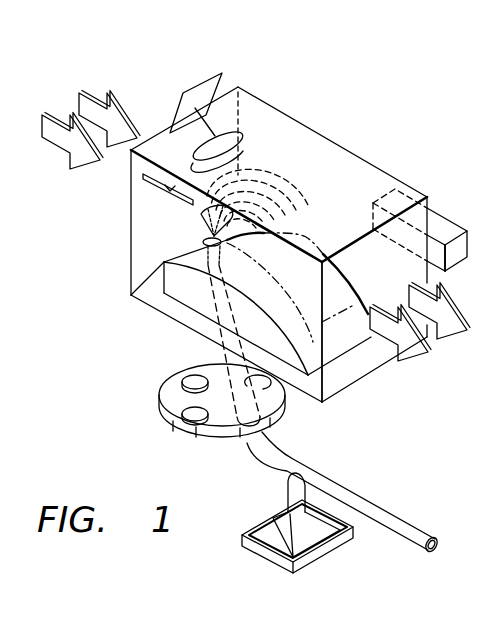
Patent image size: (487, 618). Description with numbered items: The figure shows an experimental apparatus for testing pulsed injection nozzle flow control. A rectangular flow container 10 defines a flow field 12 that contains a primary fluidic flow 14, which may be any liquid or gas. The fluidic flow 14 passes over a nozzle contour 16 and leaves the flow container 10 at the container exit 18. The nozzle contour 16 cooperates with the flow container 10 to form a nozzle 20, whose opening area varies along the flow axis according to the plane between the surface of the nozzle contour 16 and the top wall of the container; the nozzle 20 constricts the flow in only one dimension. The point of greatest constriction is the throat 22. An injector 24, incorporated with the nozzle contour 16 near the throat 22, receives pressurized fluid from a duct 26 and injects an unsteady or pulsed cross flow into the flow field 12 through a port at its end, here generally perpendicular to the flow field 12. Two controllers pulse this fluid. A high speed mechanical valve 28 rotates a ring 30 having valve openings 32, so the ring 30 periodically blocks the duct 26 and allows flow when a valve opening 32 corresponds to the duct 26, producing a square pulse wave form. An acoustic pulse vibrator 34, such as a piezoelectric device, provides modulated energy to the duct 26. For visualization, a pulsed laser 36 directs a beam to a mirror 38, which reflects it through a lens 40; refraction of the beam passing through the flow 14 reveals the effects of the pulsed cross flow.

The flow container 10 is at (341, 127).
The flow field 12 is at (168, 198).
The fluidic flow 14 is at (53, 141).
The nozzle contour 16 is at (337, 342).
The container exit 18 is at (338, 406).
The nozzle 20 is at (113, 191).
The throat 22 is at (191, 275).
The injector 24 is at (200, 250).
The duct 26 is at (402, 526).
The high speed mechanical valve 28 is at (172, 391).
The ring 30 is at (114, 396).
The valve openings 32 is at (207, 421).
The acoustic pulse vibrator 34 is at (265, 552).
The pulsed laser 36 is at (446, 230).
The mirror 38 is at (181, 103).
The lens 40 is at (244, 146).